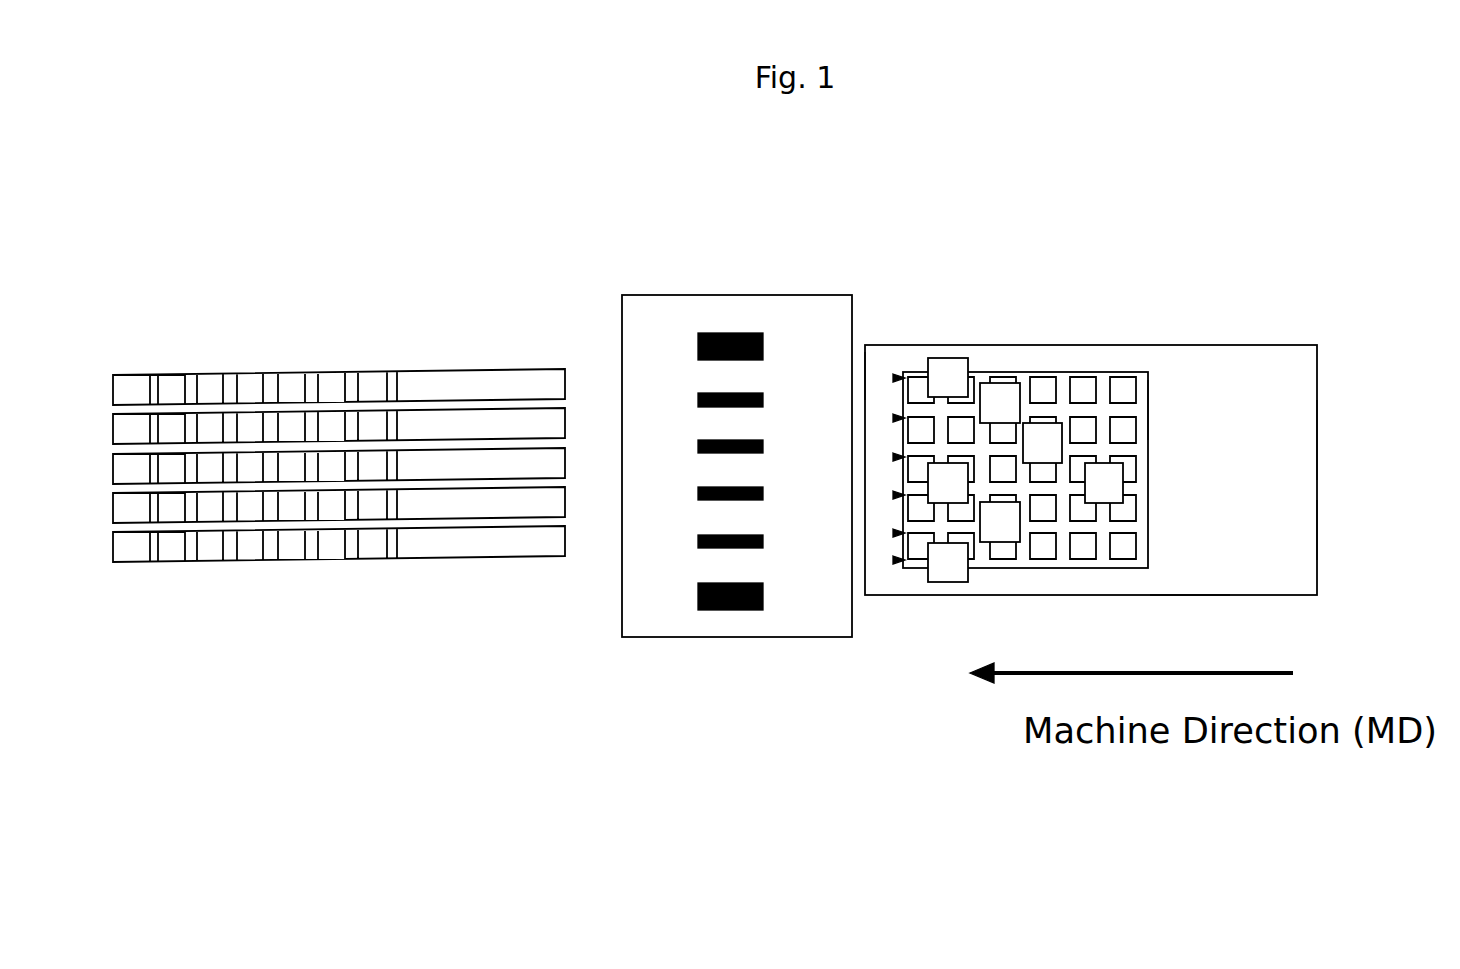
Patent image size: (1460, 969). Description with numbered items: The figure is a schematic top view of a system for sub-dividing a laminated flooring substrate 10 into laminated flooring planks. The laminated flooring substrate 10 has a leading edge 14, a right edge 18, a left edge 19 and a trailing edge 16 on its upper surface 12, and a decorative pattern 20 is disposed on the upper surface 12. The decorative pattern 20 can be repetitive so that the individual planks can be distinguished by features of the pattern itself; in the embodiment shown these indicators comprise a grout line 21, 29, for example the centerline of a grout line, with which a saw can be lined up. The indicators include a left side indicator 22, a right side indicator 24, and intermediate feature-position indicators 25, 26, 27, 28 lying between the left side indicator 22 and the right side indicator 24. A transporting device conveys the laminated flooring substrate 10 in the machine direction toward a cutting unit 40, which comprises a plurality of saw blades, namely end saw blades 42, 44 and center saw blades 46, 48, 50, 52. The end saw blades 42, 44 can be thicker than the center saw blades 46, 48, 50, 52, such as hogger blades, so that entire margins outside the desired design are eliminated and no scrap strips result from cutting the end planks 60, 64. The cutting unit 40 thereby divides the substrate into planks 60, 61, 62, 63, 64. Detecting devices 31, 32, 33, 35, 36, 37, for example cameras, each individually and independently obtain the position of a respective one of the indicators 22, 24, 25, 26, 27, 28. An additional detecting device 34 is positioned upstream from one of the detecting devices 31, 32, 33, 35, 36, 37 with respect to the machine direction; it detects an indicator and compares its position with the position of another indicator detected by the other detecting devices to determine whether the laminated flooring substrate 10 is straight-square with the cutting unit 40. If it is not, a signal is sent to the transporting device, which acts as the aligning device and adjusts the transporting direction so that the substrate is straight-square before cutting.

The laminated flooring substrate 10 is at (1243, 372).
The upper surface 12 is at (1286, 456).
The leading edge 14 is at (865, 363).
The trailing edge 16 is at (1320, 522).
The right edge 18 is at (1130, 372).
The left edge 19 is at (1183, 595).
The decorative pattern 20 is at (1147, 410).
The grout line 21 is at (1132, 527).
The left side indicator 22 is at (898, 560).
The right side indicator 24 is at (898, 378).
The intermediate feature-position indicator 25 is at (898, 418).
The intermediate feature-position indicator 26 is at (898, 457).
The intermediate feature-position indicator 27 is at (898, 495).
The intermediate feature-position indicator 28 is at (898, 533).
The grout line 29 is at (1105, 393).
The detecting device 31 is at (945, 374).
The detecting device 32 is at (1003, 398).
The detecting device 33 is at (1048, 428).
The additional detecting device 34 is at (1100, 487).
The detecting device 35 is at (1043, 533).
The detecting device 36 is at (950, 560).
The detecting device 37 is at (953, 487).
The cutting unit 40 is at (622, 313).
The end saw blade 42 is at (720, 333).
The end saw blade 44 is at (700, 610).
The center saw blade 46 is at (698, 399).
The center saw blade 48 is at (698, 448).
The center saw blade 50 is at (698, 493).
The center saw blade 52 is at (698, 540).
The laminated flooring plank 60 is at (418, 392).
The laminated flooring plank 61 is at (430, 424).
The laminated flooring plank 62 is at (453, 463).
The laminated flooring plank 63 is at (430, 503).
The laminated flooring plank 64 is at (508, 542).